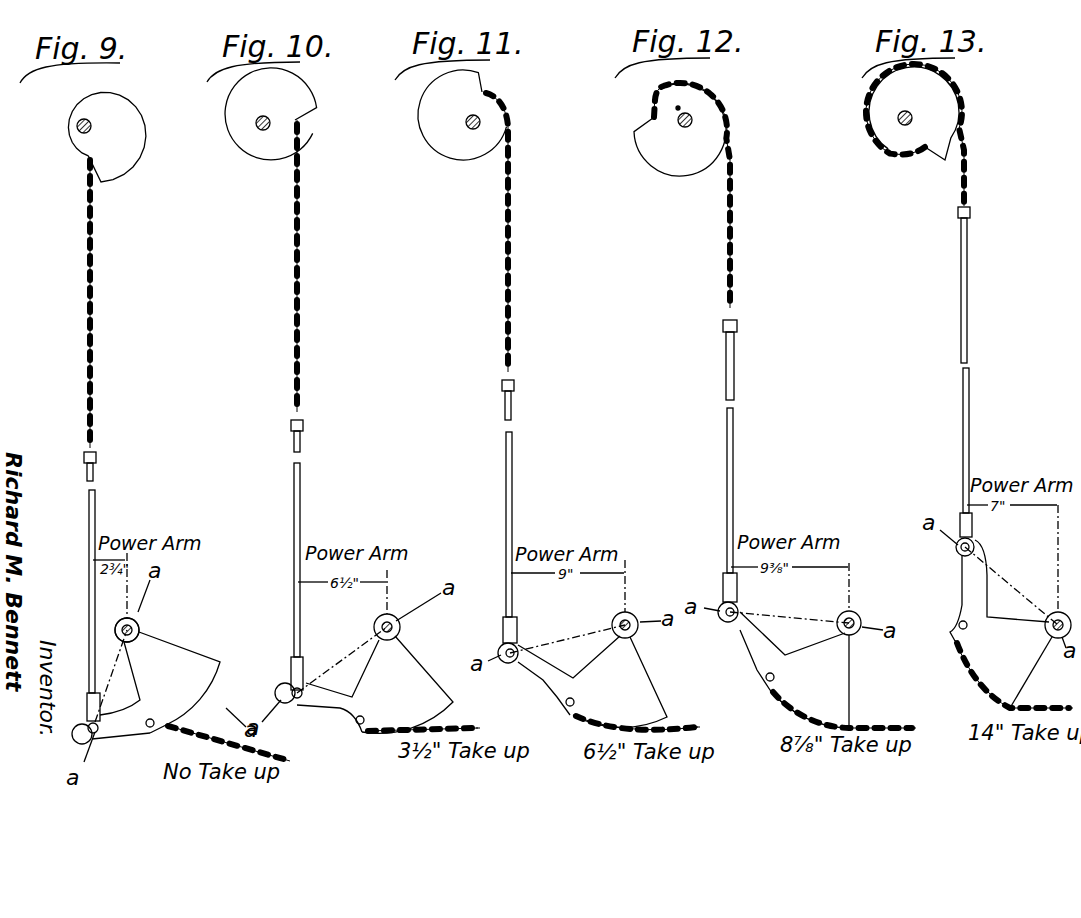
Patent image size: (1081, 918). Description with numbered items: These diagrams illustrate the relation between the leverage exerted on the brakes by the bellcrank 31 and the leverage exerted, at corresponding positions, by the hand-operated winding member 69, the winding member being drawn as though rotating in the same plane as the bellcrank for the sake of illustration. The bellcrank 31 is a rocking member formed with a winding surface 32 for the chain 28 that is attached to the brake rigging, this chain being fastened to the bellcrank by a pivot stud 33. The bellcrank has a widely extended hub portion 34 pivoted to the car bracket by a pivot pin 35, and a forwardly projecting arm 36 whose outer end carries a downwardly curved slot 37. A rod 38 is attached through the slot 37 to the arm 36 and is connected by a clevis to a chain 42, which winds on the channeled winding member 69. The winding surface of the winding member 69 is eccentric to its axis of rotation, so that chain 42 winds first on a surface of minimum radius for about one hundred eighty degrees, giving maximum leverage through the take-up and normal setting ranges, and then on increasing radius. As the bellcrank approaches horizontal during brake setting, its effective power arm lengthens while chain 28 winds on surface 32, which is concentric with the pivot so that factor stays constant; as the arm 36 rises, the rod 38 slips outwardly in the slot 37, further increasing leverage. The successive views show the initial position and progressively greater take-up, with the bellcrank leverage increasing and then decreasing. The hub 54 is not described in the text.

In FIG. 9, the winding member 69 is at (131, 100).
In FIG. 10, the winding member 69 is at (305, 89).
In FIG. 11, the winding member 69 is at (437, 152).
In FIG. 12, the winding member 69 is at (672, 171).
In FIG. 13, the winding member 69 is at (926, 136).
In FIG. 9, the cam shaft 54 is at (77, 126).
In FIG. 10, the cam shaft 54 is at (258, 130).
In FIG. 9, the chain 42 is at (93, 250).
In FIG. 10, the chain 42 is at (300, 262).
In FIG. 11, the chain 42 is at (505, 290).
In FIG. 12, the chain 42 is at (727, 248).
In FIG. 13, the chain 42 is at (967, 176).
In FIG. 9, the rod 38 is at (97, 521).
In FIG. 10, the rod 38 is at (300, 512).
In FIG. 11, the rod 38 is at (512, 488).
In FIG. 12, the rod 38 is at (731, 471).
In FIG. 13, the rod 38 is at (970, 436).
In FIG. 9, the slot 37 is at (77, 725).
In FIG. 10, the slot 37 is at (296, 700).
In FIG. 11, the slot 37 is at (520, 648).
In FIG. 12, the slot 37 is at (725, 621).
In FIG. 13, the slot 37 is at (958, 556).
In FIG. 9, the forwardly projecting arm 36 is at (118, 735).
In FIG. 10, the forwardly projecting arm 36 is at (333, 713).
In FIG. 11, the forwardly projecting arm 36 is at (545, 682).
In FIG. 12, the forwardly projecting arm 36 is at (750, 638).
In FIG. 13, the forwardly projecting arm 36 is at (960, 589).
In FIG. 9, the pivot pin 35 is at (132, 624).
In FIG. 10, the pivot pin 35 is at (384, 619).
In FIG. 11, the pivot pin 35 is at (640, 606).
In FIG. 12, the pivot pin 35 is at (851, 612).
In FIG. 13, the pivot pin 35 is at (1056, 612).
In FIG. 9, the hub portion 34 is at (140, 629).
In FIG. 9, the bellcrank 31 is at (212, 665).
In FIG. 10, the bellcrank 31 is at (422, 668).
In FIG. 11, the bellcrank 31 is at (660, 691).
In FIG. 12, the bellcrank 31 is at (852, 674).
In FIG. 13, the bellcrank 31 is at (1003, 680).
In FIG. 9, the pivot stud 33 is at (148, 728).
In FIG. 10, the pivot stud 33 is at (360, 726).
In FIG. 11, the pivot stud 33 is at (570, 708).
In FIG. 12, the pivot stud 33 is at (770, 683).
In FIG. 13, the pivot stud 33 is at (960, 628).
In FIG. 9, the winding surface 32 is at (191, 710).
In FIG. 10, the winding surface 32 is at (450, 718).
In FIG. 11, the winding surface 32 is at (680, 719).
In FIG. 12, the winding surface 32 is at (822, 722).
In FIG. 13, the winding surface 32 is at (967, 671).
In FIG. 10, the chain 28 is at (494, 719).
In FIG. 11, the chain 28 is at (721, 719).
In FIG. 12, the chain 28 is at (930, 714).
In FIG. 13, the chain 28 is at (1040, 705).